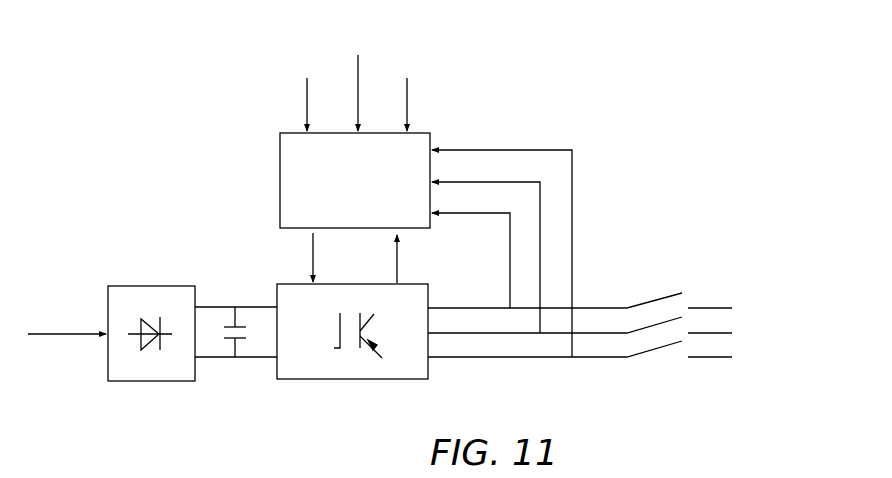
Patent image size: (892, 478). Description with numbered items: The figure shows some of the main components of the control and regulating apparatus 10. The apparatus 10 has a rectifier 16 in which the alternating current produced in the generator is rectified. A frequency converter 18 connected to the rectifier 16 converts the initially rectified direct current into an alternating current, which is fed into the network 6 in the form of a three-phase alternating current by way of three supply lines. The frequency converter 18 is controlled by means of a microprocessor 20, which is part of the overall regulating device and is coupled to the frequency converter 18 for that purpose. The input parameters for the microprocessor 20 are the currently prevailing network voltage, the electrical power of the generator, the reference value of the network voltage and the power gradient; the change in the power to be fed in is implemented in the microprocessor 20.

The control and regulating apparatus 10 is at (537, 89).
The microprocessor 20 is at (280, 157).
The rectifier 16 is at (138, 381).
The frequency converter 18 is at (313, 380).
The network 6 is at (806, 287).